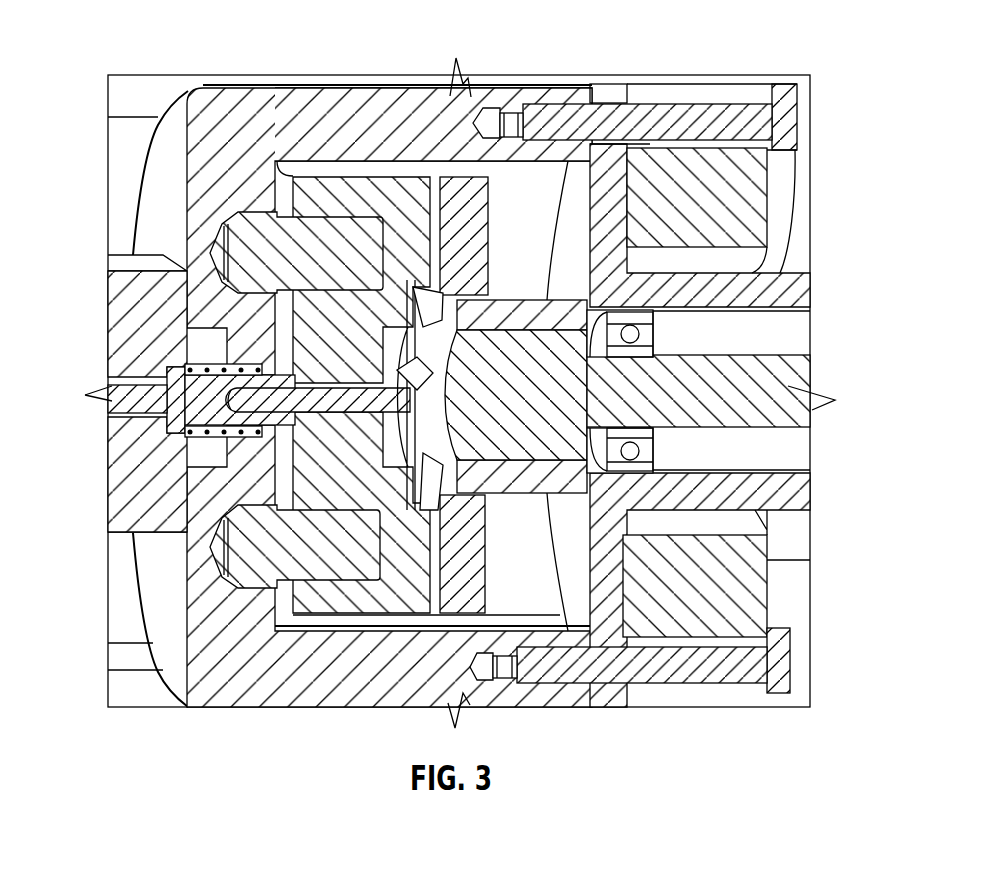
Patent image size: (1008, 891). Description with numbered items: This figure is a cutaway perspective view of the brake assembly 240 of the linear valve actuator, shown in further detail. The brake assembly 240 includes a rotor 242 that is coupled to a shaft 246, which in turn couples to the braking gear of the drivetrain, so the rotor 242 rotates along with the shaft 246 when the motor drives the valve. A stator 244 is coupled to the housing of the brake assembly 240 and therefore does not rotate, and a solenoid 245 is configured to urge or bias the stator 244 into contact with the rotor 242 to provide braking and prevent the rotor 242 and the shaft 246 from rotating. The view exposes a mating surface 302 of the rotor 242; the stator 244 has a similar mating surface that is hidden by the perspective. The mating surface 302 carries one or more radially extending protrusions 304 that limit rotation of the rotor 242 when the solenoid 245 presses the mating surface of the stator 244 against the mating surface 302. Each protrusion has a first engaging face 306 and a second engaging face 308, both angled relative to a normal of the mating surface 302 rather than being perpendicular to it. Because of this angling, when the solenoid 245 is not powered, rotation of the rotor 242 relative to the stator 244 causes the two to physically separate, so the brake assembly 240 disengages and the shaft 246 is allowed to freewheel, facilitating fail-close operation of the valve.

The brake assembly 240 is at (443, 126).
The rotor 242 is at (467, 222).
The stator 244 is at (367, 195).
The solenoid 245 is at (183, 405).
The shaft 246 is at (800, 413).
The mating surface 302 is at (430, 299).
The radially extending protrusions 304 is at (430, 383).
The first engaging face 306 is at (410, 368).
The second engaging face 308 is at (416, 453).